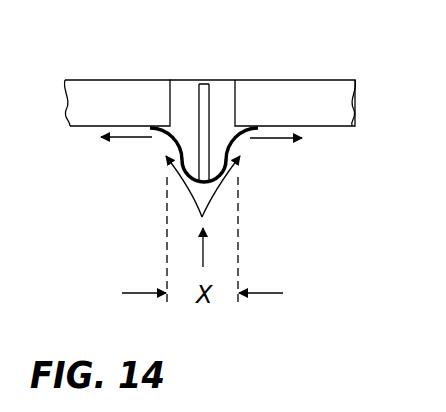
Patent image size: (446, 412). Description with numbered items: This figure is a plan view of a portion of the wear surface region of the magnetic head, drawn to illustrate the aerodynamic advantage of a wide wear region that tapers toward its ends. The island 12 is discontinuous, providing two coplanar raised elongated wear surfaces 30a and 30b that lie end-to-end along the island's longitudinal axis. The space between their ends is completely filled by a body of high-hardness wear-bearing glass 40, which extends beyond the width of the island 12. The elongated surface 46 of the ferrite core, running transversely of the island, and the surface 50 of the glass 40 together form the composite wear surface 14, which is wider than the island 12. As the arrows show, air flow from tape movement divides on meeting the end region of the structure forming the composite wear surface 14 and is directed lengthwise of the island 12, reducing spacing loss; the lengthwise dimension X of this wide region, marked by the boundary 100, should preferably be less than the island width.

The island 12 is at (340, 140).
The composite wear surface 14 is at (180, 93).
The raised elongated wear surface 30a is at (320, 92).
The raised elongated wear surface 30b is at (95, 95).
The glass 40 is at (188, 97).
The elongated surface 46 is at (207, 107).
The surface 50 is at (217, 133).
The pool boundary 100 is at (218, 196).